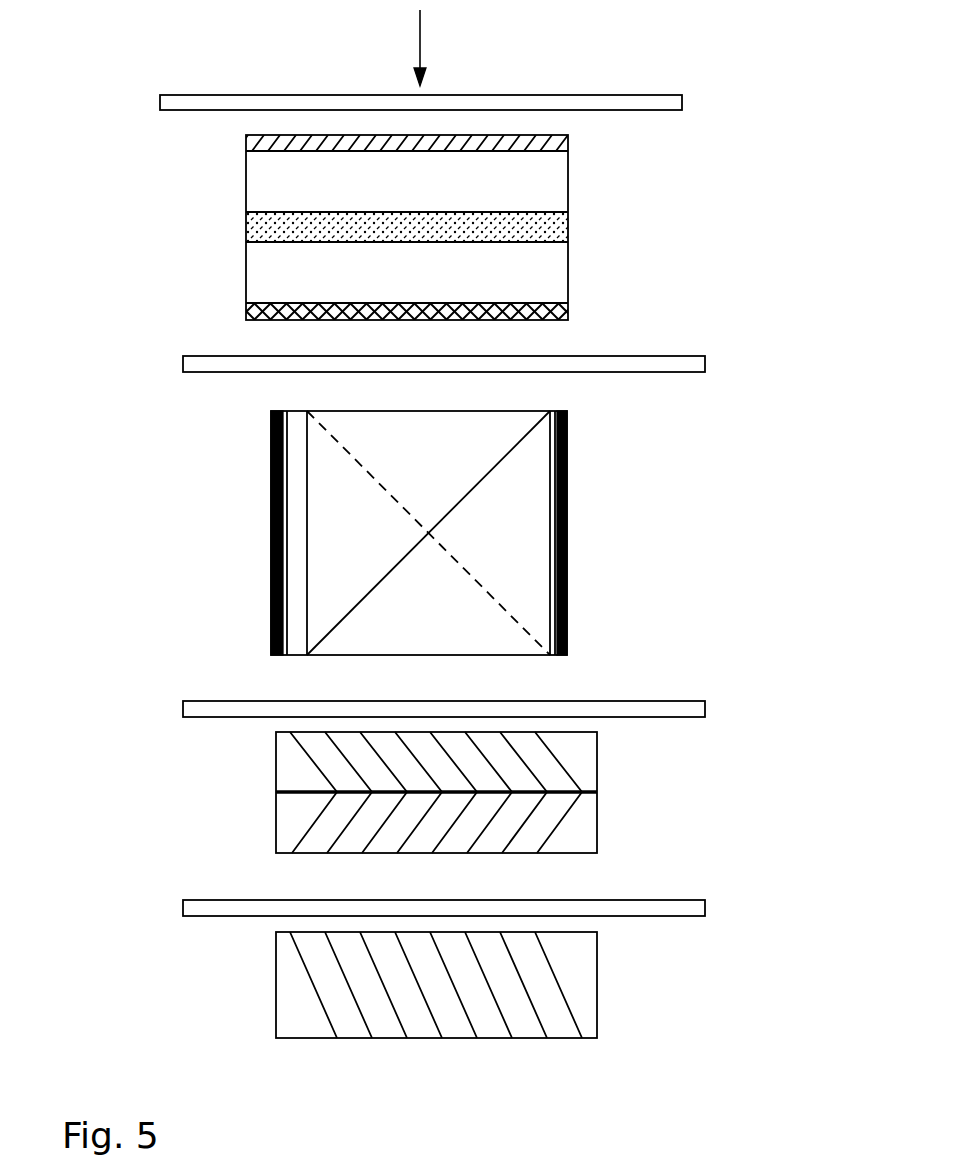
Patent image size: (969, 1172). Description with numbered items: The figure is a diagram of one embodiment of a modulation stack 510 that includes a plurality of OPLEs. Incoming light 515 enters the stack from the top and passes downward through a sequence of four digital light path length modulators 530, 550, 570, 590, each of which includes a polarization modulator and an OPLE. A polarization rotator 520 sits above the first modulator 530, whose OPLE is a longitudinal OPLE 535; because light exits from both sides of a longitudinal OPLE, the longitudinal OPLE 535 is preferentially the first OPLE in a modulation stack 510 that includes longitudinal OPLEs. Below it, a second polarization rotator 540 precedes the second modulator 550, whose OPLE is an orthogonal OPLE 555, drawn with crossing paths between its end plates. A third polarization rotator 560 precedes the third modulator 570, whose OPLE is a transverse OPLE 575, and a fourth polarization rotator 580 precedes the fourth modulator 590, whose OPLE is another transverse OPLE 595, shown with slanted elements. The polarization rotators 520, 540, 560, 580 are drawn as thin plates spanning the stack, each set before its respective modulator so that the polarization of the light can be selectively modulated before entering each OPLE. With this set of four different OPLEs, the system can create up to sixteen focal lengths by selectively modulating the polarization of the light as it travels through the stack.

The modulation stack 510 is at (463, 543).
The incoming light 515 is at (378, 48).
The polarization rotator 520 is at (361, 104).
The first light path length modulator 530 is at (546, 227).
The longitudinal OPLE 535 is at (546, 227).
The polarization rotator 540 is at (382, 412).
The second light path length modulator 550 is at (566, 533).
The orthogonal OPLE 555 is at (566, 533).
The polarization rotator 560 is at (377, 709).
The third light path length modulator 570 is at (581, 794).
The transverse OPLE 575 is at (581, 804).
The polarization rotator 580 is at (387, 916).
The fourth light path length modulator 590 is at (581, 994).
The transverse OPLE 595 is at (581, 1004).